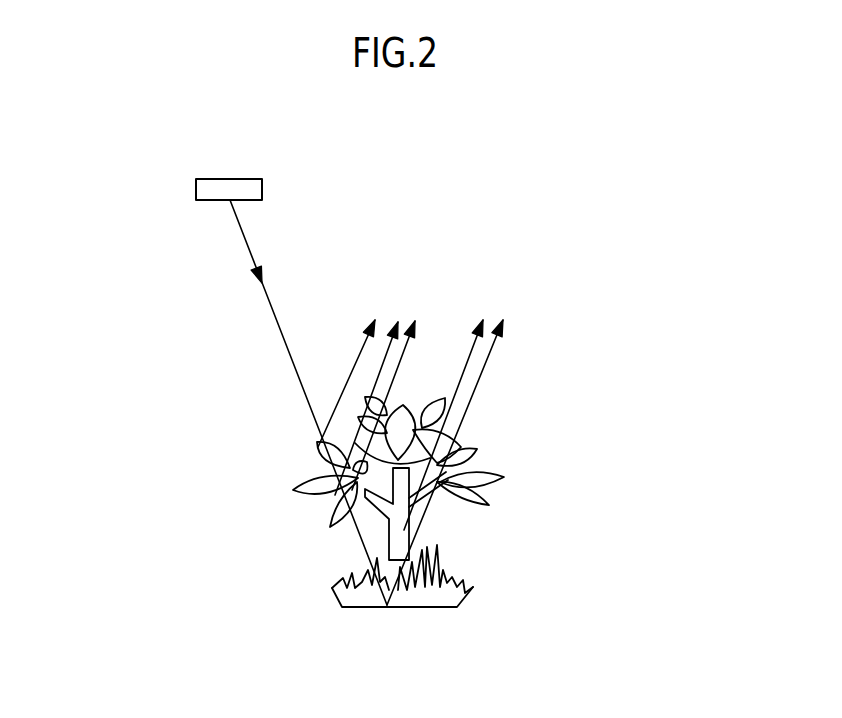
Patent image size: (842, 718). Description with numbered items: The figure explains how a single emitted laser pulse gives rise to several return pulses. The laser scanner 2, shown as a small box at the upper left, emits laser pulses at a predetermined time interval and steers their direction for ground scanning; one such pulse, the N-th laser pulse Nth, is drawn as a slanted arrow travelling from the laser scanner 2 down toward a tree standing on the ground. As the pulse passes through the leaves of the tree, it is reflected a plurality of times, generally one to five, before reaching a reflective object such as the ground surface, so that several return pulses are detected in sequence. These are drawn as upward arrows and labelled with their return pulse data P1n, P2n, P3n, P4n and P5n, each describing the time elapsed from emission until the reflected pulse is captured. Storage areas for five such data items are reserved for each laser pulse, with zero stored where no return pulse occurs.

The laser scanner 2 is at (238, 181).
The N-th laser pulse Nth is at (242, 240).
The first return pulse data P1n is at (346, 372).
The second return pulse data P2n is at (413, 336).
The third return pulse data P3n is at (400, 338).
The fourth return pulse data P4n is at (472, 352).
The fifth return pulse data P5n is at (488, 347).